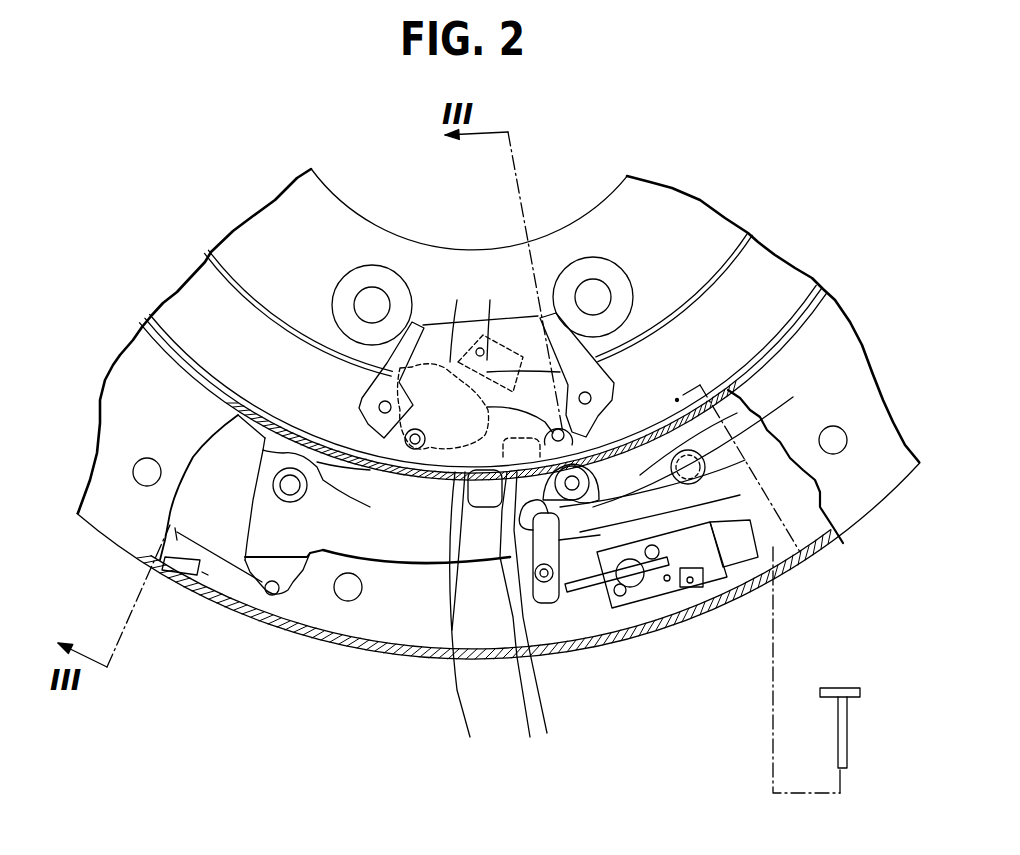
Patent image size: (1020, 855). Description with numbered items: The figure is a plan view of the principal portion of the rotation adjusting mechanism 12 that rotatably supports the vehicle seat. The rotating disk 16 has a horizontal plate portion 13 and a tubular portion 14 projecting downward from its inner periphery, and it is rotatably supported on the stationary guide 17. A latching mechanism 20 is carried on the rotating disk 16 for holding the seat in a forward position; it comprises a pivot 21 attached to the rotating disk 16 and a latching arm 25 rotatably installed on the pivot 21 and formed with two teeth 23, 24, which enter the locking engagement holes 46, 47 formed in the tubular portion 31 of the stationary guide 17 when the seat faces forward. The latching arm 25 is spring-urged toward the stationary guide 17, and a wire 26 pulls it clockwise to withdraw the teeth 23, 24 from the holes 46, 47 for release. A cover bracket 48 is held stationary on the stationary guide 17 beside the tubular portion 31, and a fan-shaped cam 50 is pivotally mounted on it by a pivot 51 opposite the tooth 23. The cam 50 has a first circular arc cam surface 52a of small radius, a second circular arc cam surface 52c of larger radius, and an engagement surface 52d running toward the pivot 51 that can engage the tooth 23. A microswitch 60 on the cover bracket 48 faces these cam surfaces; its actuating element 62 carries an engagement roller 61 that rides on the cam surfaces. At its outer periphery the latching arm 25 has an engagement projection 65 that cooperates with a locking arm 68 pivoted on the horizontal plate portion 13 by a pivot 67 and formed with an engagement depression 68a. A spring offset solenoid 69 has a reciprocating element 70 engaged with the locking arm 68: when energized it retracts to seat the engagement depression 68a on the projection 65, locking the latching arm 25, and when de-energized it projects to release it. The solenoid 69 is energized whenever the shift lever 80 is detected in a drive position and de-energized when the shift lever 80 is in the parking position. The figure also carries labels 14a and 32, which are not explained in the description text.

The rotation adjusting mechanism 12 is at (130, 560).
The horizontal plate portion 13 is at (870, 497).
The tubular portion 14 is at (177, 373).
The cover flange 14a is at (443, 470).
The rotating disk 16 is at (107, 522).
The stationary guide 17 is at (457, 300).
The latching mechanism 20 is at (393, 577).
The pivot 21 is at (280, 488).
The tooth 23 is at (442, 486).
The tooth 24 is at (618, 400).
The latching arm 25 is at (290, 615).
The wire 26 is at (220, 567).
The tubular portion 31 is at (203, 385).
The pressure plate lug 32 is at (343, 228).
The locking engagement hole 46 is at (470, 737).
The locking engagement hole 47 is at (530, 737).
The cover bracket 48 is at (522, 328).
The cam 50 is at (363, 400).
The pivot 51 is at (400, 440).
The first circular arc cam surface 52a is at (432, 263).
The second circular arc cam surface 52c is at (620, 380).
The engagement surface 52d is at (478, 503).
The microswitch 60 is at (527, 247).
The engagement roller 61 is at (490, 300).
The actuating element 62 is at (612, 365).
The engagement projection 65 is at (547, 733).
The pivot 67 is at (549, 583).
The locking arm 68 is at (753, 467).
The engagement depression 68a is at (727, 460).
The solenoid 69 is at (807, 503).
The reciprocating element 70 is at (577, 587).
The shift lever 80 is at (847, 725).